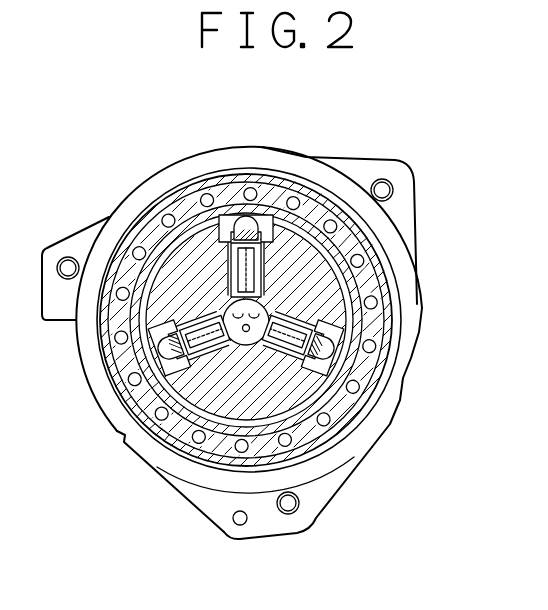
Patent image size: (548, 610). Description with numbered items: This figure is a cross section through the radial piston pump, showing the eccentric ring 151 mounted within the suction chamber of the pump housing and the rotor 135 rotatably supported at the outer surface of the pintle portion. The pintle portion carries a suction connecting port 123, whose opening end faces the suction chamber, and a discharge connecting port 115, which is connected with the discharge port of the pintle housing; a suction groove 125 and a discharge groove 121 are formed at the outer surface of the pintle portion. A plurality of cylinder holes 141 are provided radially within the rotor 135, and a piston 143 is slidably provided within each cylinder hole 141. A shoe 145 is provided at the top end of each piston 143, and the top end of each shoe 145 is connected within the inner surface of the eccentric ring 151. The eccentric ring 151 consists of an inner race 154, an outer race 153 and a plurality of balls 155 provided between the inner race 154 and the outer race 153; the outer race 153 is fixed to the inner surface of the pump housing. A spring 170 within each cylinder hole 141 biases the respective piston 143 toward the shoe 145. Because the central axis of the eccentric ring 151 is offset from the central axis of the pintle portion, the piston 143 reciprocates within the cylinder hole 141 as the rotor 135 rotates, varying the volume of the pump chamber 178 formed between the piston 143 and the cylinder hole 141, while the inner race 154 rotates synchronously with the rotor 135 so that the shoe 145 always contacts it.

The discharge connecting port 115 is at (143, 402).
The discharge groove 121 is at (238, 492).
The suction connecting port 123 is at (270, 157).
The suction groove 125 is at (184, 195).
The rotor 135 is at (317, 320).
The cylinder hole 141 is at (376, 335).
The piston 143 is at (302, 373).
The shoe 145 is at (308, 408).
The eccentric ring 151 is at (302, 435).
The outer race 153 is at (283, 478).
The inner race 154 is at (258, 475).
The balls 155 is at (190, 455).
The spring 170 is at (150, 262).
The pump chamber 178 is at (333, 215).